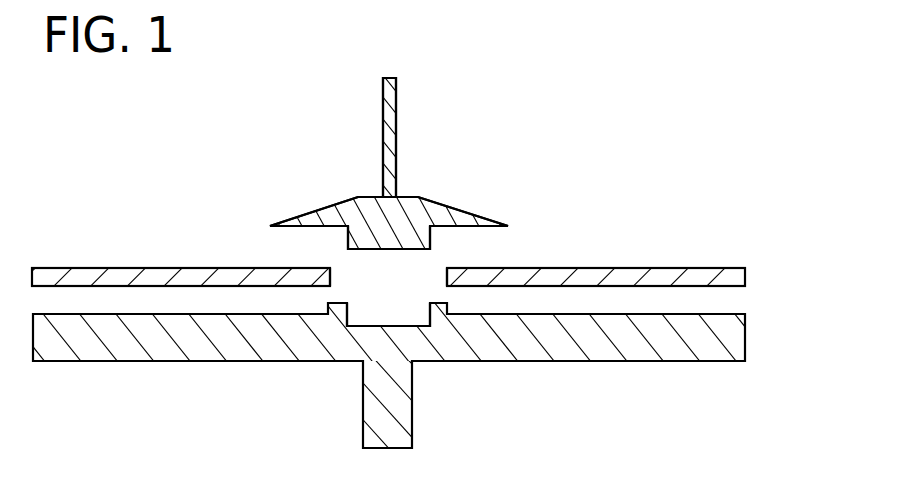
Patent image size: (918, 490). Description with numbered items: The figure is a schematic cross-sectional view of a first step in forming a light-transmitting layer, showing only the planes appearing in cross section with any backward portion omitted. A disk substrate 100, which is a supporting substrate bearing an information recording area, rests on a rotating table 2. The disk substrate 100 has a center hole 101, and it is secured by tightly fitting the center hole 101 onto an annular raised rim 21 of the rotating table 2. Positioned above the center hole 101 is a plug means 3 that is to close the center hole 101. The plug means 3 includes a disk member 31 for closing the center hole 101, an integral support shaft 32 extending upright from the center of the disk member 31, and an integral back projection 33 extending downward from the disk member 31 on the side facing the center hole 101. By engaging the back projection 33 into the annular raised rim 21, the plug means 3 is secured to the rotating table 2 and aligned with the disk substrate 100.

The rotating table 2 is at (738, 337).
The annular raised rim 21 is at (430, 300).
The plug means 3 is at (558, 150).
The disk member 31 is at (430, 202).
The support shaft 32 is at (396, 158).
The back projection 33 is at (430, 240).
The disk substrate 100 is at (738, 277).
The center hole 101 is at (347, 273).